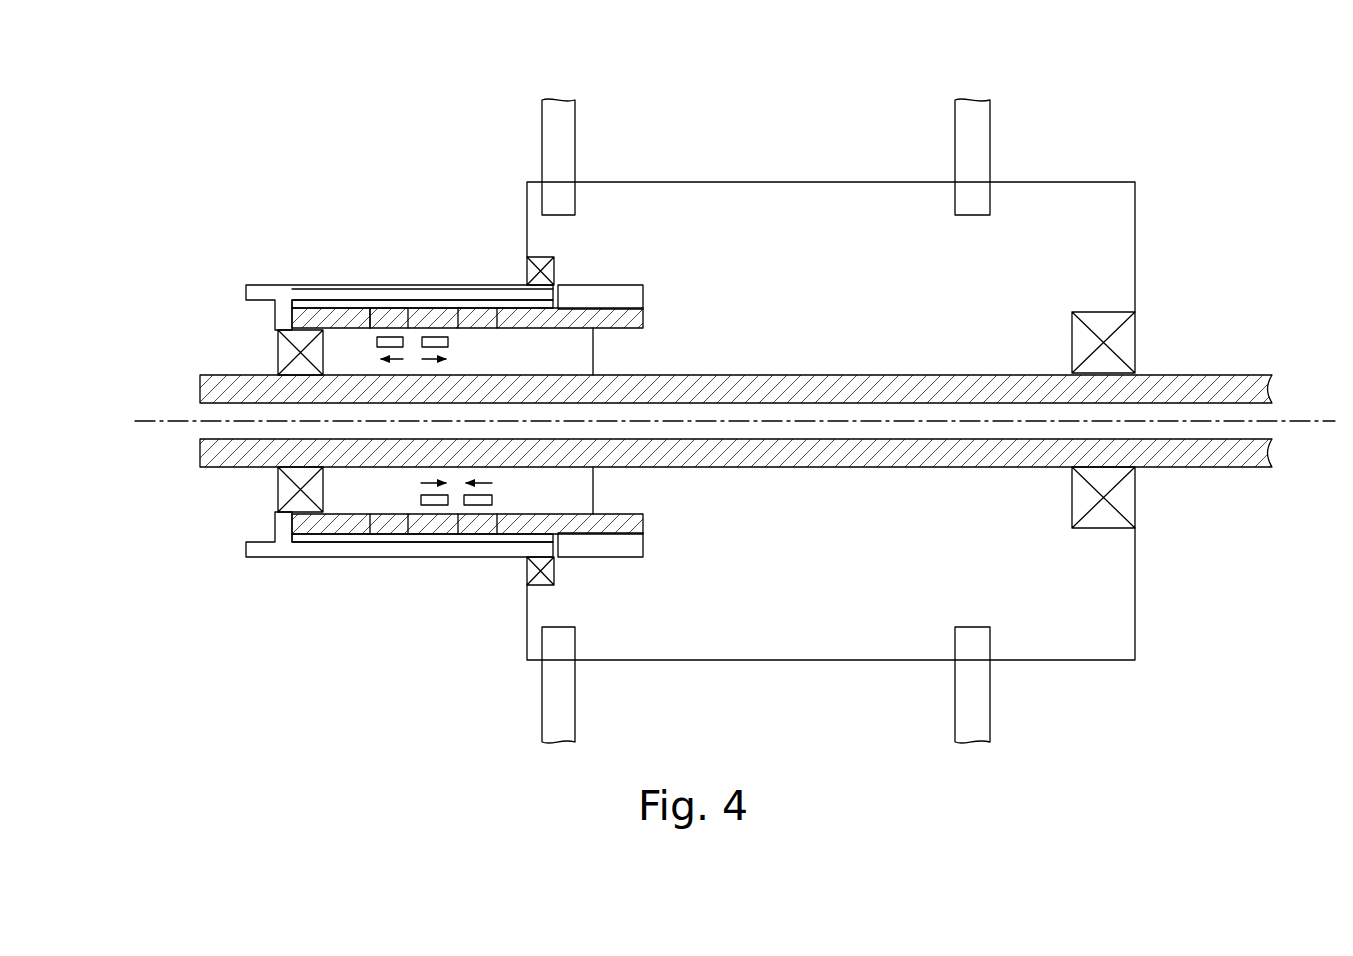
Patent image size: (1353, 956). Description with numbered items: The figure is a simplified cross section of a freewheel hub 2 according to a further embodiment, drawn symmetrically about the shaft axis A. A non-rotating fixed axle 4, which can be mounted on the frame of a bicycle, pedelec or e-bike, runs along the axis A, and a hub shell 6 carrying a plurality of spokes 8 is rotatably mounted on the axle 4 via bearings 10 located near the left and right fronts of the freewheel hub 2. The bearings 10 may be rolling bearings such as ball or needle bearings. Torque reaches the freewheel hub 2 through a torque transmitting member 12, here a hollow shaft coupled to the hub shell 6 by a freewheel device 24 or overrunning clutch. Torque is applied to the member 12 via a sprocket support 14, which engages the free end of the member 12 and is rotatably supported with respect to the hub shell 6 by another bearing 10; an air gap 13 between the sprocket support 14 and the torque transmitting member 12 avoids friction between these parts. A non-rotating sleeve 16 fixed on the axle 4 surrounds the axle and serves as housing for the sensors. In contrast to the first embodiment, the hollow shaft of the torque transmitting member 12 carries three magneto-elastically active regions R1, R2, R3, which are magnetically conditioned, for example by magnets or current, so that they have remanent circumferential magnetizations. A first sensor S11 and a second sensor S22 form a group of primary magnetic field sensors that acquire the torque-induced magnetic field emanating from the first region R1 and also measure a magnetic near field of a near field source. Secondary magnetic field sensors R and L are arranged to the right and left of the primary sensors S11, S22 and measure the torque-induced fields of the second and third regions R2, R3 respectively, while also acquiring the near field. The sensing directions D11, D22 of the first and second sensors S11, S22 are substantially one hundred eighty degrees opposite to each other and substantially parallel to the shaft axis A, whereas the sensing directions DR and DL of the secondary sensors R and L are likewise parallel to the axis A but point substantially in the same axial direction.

The freewheel hub 2 is at (1222, 101).
The fixed axle 4 is at (1235, 375).
The hub shell 6 is at (1105, 182).
The spokes 8 is at (575, 128).
The bearings 10 is at (278, 350).
The torque transmitting member 12 is at (643, 318).
The air gap 13 is at (300, 285).
The sprocket support 14 is at (310, 285).
The sleeve 16 is at (593, 345).
The freewheel device 24 is at (630, 285).
The shaft axis A is at (1290, 421).
The secondary magnetic field sensor L is at (390, 337).
The secondary magnetic field sensor R is at (480, 505).
The first magneto-elastically active region R1 is at (425, 308).
The second magneto-elastically active region R2 is at (372, 308).
The third magneto-elastically active region R3 is at (487, 308).
The first sensor S11 is at (436, 337).
The second sensor S22 is at (434, 505).
The sensing direction D11 is at (448, 359).
The sensing direction D22 is at (420, 483).
The sensing direction DL is at (382, 364).
The sensing direction DR is at (493, 483).